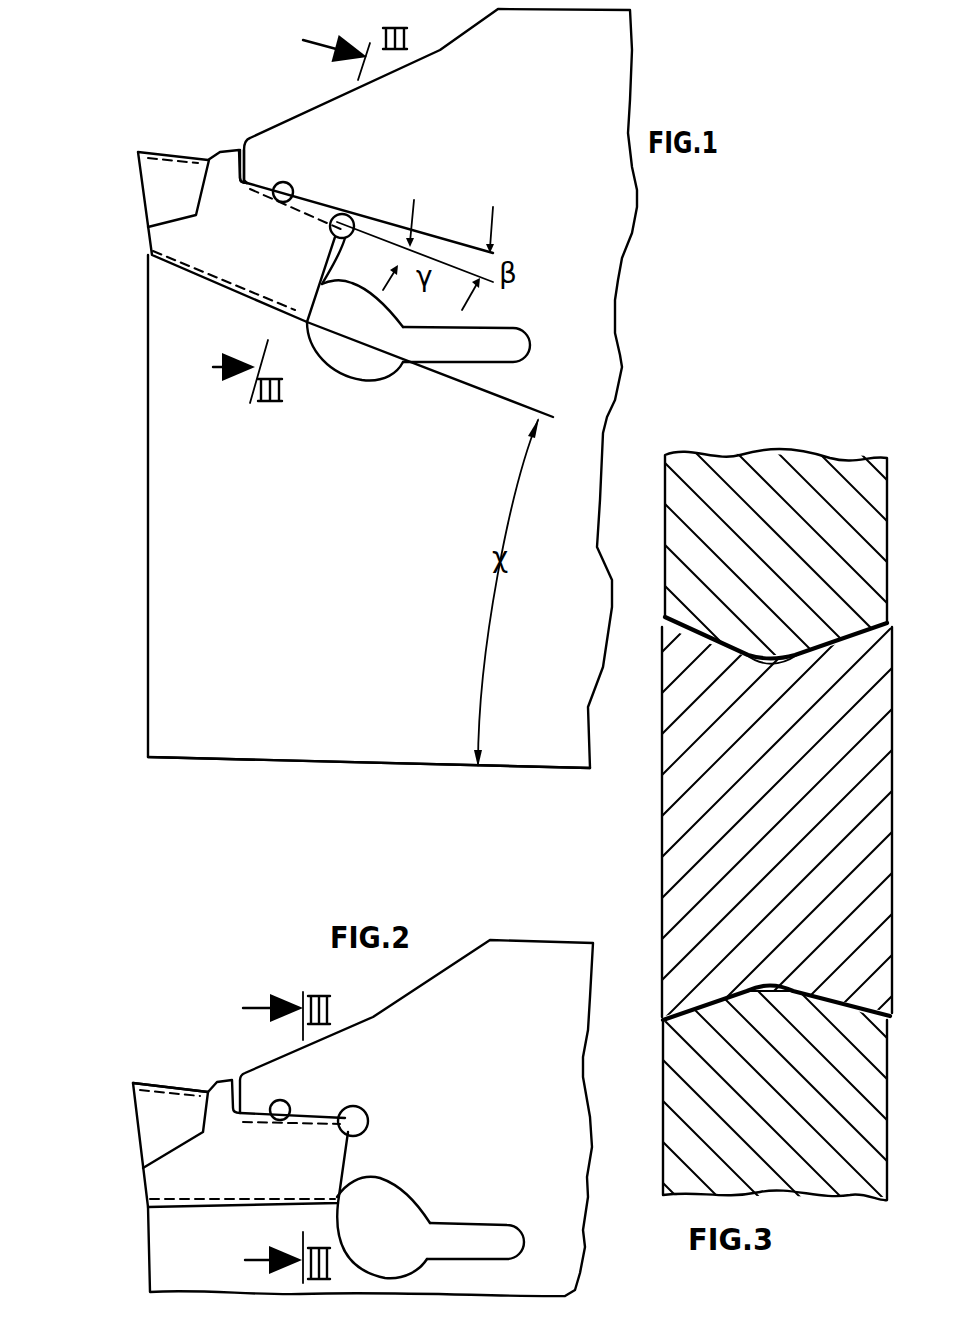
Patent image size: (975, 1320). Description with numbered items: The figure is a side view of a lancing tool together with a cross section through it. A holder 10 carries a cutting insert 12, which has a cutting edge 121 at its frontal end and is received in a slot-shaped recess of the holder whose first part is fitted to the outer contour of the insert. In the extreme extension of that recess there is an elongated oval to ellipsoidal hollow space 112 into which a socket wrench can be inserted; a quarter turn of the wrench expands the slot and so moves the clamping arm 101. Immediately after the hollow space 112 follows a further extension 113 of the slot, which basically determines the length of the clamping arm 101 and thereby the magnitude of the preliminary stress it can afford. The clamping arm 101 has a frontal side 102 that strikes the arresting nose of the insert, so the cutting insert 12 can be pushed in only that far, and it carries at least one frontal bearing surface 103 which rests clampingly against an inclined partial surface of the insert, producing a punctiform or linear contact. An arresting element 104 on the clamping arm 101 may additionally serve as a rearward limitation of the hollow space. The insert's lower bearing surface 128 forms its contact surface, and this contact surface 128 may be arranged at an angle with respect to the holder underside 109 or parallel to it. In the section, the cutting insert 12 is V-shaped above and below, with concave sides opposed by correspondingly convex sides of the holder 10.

In FIG. 1, the holder 10 is at (362, 724).
In FIG. 2, the holder 10 is at (506, 1069).
In FIG. 3, the holder 10 is at (807, 510).
In FIG. 1, the cutting insert 12 is at (250, 247).
In FIG. 2, the cutting insert 12 is at (252, 1182).
In FIG. 3, the cutting insert 12 is at (830, 750).
In FIG. 1, the clamping arm 101 is at (277, 153).
In FIG. 1, the frontal side of the clamping arm 102 is at (241, 143).
In FIG. 1, the frontal bearing surface 103 is at (260, 182).
In FIG. 1, the arresting element 104 is at (352, 242).
In FIG. 2, the arresting element 104 is at (357, 1162).
In FIG. 1, the holder underside 109 is at (297, 760).
In FIG. 1, the hollow space 112 is at (372, 341).
In FIG. 2, the hollow space 112 is at (395, 1244).
In FIG. 1, the further extension of the slot 113 is at (443, 343).
In FIG. 2, the further extension of the slot 113 is at (485, 1240).
In FIG. 2, the cutting edge 121 is at (110, 1059).
In FIG. 1, the lower bearing surface 128 is at (198, 277).